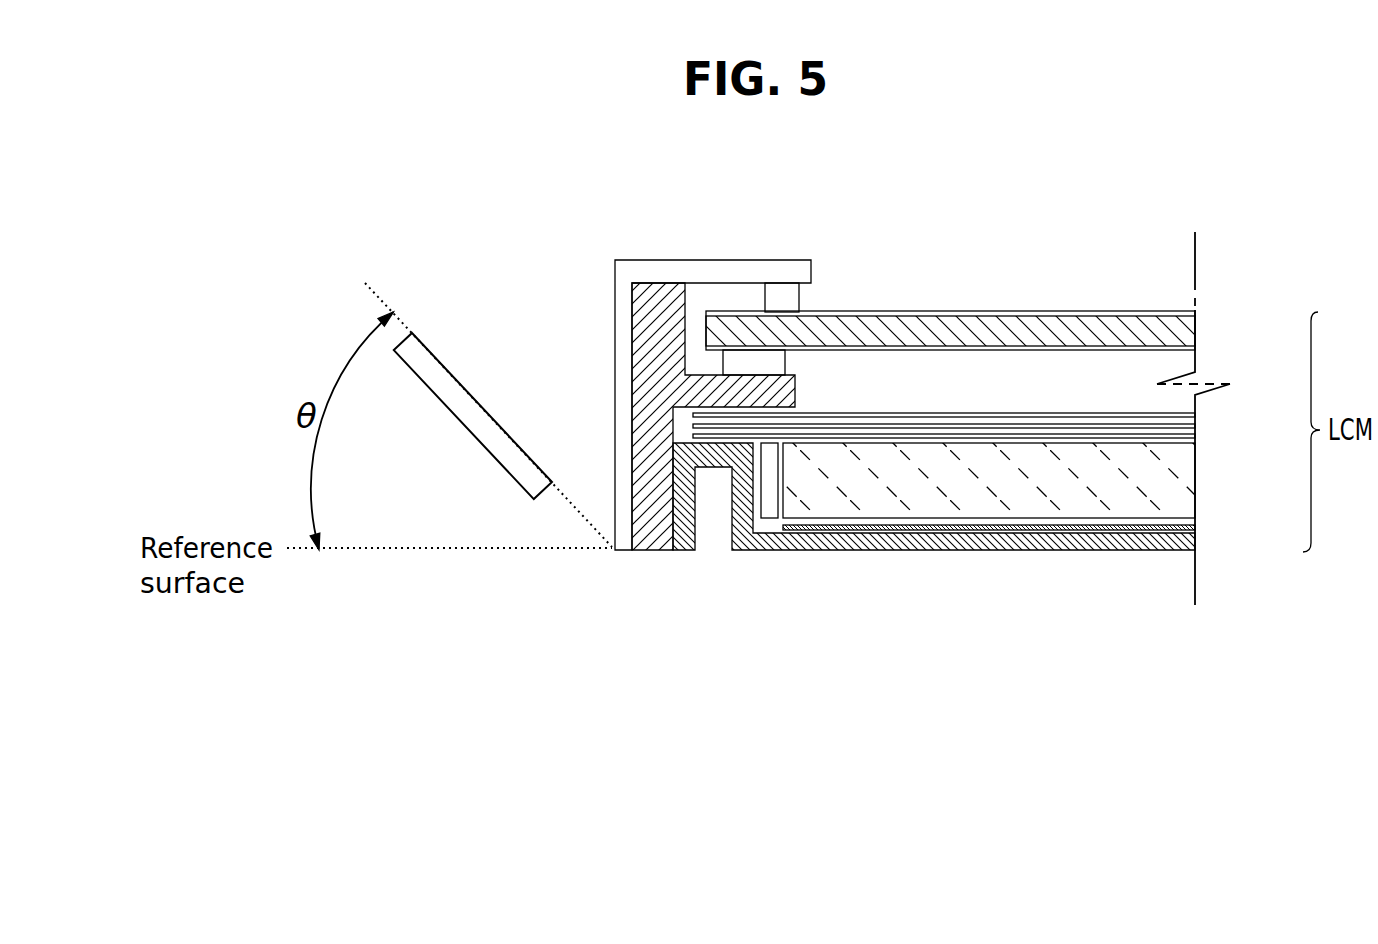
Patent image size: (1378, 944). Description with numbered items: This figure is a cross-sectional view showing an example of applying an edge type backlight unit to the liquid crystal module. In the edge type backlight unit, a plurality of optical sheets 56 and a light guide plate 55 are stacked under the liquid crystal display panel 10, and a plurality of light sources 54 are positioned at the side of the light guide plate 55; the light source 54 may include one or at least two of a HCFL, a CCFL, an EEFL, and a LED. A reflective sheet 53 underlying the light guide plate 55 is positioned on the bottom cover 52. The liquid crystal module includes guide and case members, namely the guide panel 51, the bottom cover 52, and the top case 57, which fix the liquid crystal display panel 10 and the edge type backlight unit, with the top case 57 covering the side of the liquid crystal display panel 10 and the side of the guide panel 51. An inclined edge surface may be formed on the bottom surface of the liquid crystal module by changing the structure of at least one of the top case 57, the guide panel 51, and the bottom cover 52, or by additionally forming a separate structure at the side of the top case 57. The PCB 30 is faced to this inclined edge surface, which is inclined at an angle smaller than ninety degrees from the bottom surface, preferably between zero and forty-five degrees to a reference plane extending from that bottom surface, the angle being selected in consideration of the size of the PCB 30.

The liquid crystal display panel 10 is at (1185, 331).
The PCB 30 is at (475, 413).
The guide panel 51 is at (648, 295).
The bottom cover 52 is at (1118, 540).
The reflective sheet 53 is at (1196, 523).
The light sources 54 is at (768, 507).
The light guide plate 55 is at (1186, 471).
The optical sheets 56 is at (1196, 424).
The top case 57 is at (755, 265).